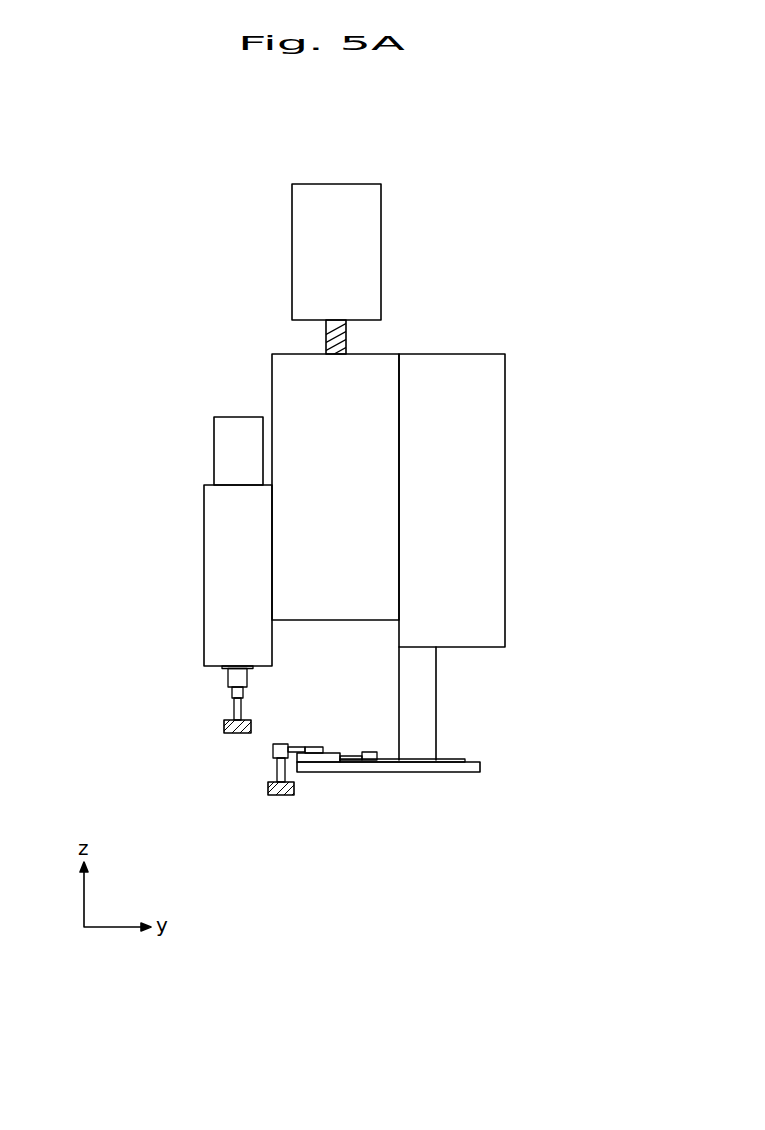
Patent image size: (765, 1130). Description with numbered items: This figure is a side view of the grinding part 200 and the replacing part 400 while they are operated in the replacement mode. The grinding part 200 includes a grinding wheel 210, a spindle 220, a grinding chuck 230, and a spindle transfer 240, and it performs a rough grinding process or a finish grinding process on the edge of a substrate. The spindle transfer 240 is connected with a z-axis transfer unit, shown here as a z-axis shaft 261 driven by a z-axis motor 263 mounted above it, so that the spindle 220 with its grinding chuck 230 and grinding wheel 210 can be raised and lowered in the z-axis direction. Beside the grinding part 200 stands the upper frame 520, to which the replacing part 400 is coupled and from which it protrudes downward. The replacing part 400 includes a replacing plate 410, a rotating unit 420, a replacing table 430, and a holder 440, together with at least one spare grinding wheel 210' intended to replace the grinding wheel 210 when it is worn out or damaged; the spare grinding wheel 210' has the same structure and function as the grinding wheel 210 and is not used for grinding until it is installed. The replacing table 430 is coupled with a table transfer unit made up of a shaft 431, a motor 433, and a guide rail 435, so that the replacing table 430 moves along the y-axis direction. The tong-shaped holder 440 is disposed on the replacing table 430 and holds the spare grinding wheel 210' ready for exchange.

The grinding part 200 is at (128, 530).
The grinding wheel 210 is at (195, 728).
The spare grinding wheel 210' is at (238, 790).
The spindle 220 is at (217, 608).
The grinding chuck 230 is at (233, 680).
The spindle transfer 240 is at (298, 541).
The z-axis shaft 261 is at (327, 332).
The z-axis motor 263 is at (300, 253).
The replacing part 400 is at (497, 750).
The replacing plate 410 is at (450, 768).
The rotating unit 420 is at (425, 676).
The replacing table 430 is at (315, 758).
The shaft 431 is at (348, 760).
The motor 433 is at (370, 760).
The guide rail 435 is at (465, 758).
The holder 440 is at (293, 747).
The upper frame 520 is at (490, 484).